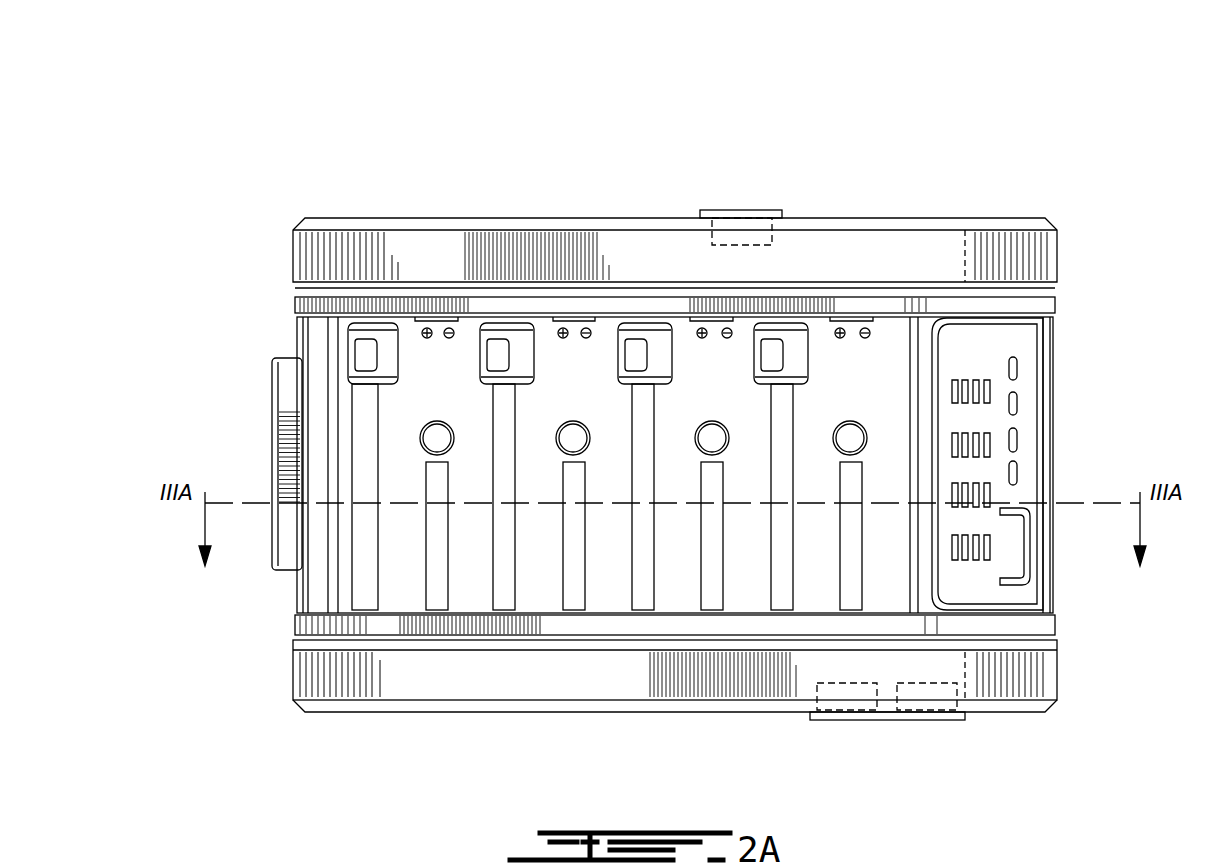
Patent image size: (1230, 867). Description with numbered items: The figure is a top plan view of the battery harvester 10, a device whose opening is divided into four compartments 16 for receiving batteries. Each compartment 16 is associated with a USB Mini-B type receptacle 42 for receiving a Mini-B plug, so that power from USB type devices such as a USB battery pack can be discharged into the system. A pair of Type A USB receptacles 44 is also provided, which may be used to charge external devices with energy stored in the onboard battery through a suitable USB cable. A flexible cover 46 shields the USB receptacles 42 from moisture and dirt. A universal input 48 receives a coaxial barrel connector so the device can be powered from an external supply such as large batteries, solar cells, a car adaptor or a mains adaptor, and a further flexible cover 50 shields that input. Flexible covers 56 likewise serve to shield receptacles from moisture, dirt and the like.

The battery harvester 10 is at (1095, 180).
The compartments 16 is at (727, 333).
The USB Mini-B type receptacle 42 is at (640, 350).
The Type A USB receptacles 44 is at (923, 693).
The flexible cover 46 is at (943, 722).
The universal input 48 is at (732, 233).
The flexible cover 50 is at (750, 208).
The flexible covers 56 is at (505, 595).